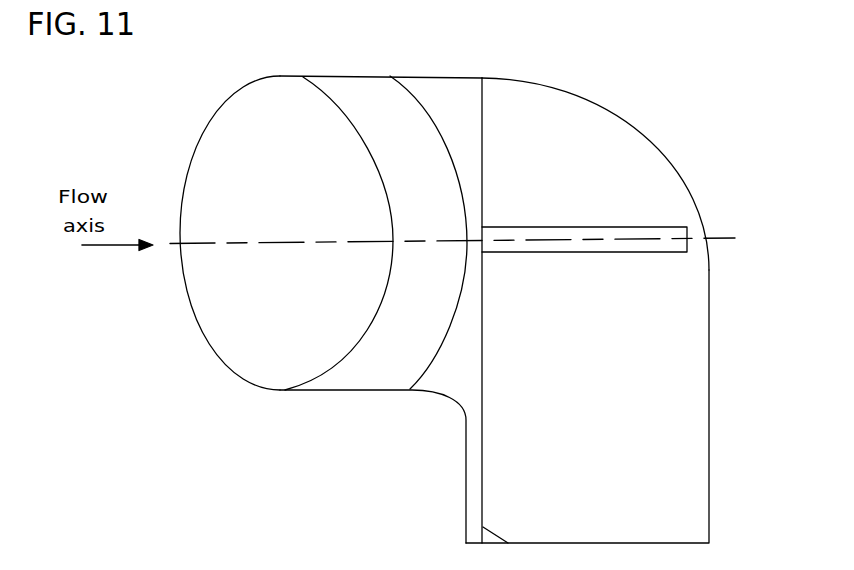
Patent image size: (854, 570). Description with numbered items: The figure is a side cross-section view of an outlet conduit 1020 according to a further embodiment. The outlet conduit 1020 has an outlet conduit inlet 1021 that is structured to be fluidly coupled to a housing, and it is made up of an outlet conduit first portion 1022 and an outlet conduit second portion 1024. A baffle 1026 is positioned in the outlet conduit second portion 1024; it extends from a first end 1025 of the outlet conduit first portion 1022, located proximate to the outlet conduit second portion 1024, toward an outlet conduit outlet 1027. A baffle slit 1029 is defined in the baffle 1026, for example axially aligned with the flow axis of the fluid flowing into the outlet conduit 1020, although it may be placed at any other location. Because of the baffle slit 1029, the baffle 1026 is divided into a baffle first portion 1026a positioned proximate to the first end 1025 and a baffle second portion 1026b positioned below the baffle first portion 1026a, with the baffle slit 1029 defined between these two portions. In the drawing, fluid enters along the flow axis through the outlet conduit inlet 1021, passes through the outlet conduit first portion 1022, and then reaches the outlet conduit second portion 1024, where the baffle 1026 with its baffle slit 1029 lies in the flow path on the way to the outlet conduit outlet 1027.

The outlet conduit 1020 is at (575, 91).
The outlet conduit inlet 1021 is at (352, 76).
The outlet conduit first portion 1022 is at (437, 76).
The outlet conduit second portion 1024 is at (711, 460).
The first end 1025 is at (527, 80).
The baffle 1026 is at (653, 144).
The baffle first portion 1026a is at (655, 215).
The baffle second portion 1026b is at (686, 378).
The outlet conduit outlet 1027 is at (483, 527).
The baffle slit 1029 is at (684, 232).